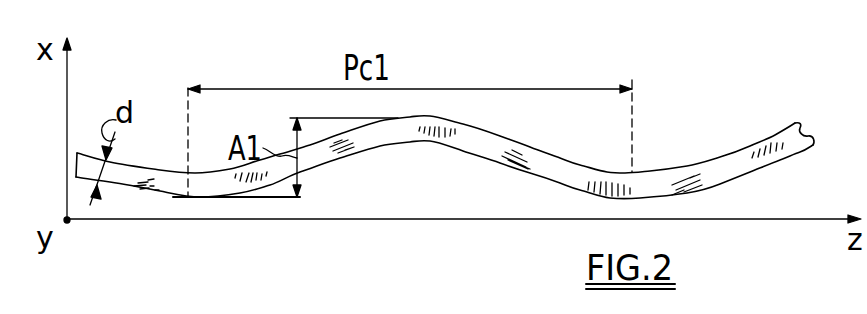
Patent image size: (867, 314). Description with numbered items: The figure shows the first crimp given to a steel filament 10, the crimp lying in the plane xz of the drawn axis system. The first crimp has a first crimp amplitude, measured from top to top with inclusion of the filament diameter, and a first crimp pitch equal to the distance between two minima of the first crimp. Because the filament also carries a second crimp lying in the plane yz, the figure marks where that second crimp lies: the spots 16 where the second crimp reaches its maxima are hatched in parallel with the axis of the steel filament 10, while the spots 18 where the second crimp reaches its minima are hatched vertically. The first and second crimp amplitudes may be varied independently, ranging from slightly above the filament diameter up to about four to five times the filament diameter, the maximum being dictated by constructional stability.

The steel filament 10 is at (213, 175).
The spots where the second crimp reaches its maxima 16 is at (342, 140).
The spots where the second crimp reaches its minima 18 is at (440, 126).